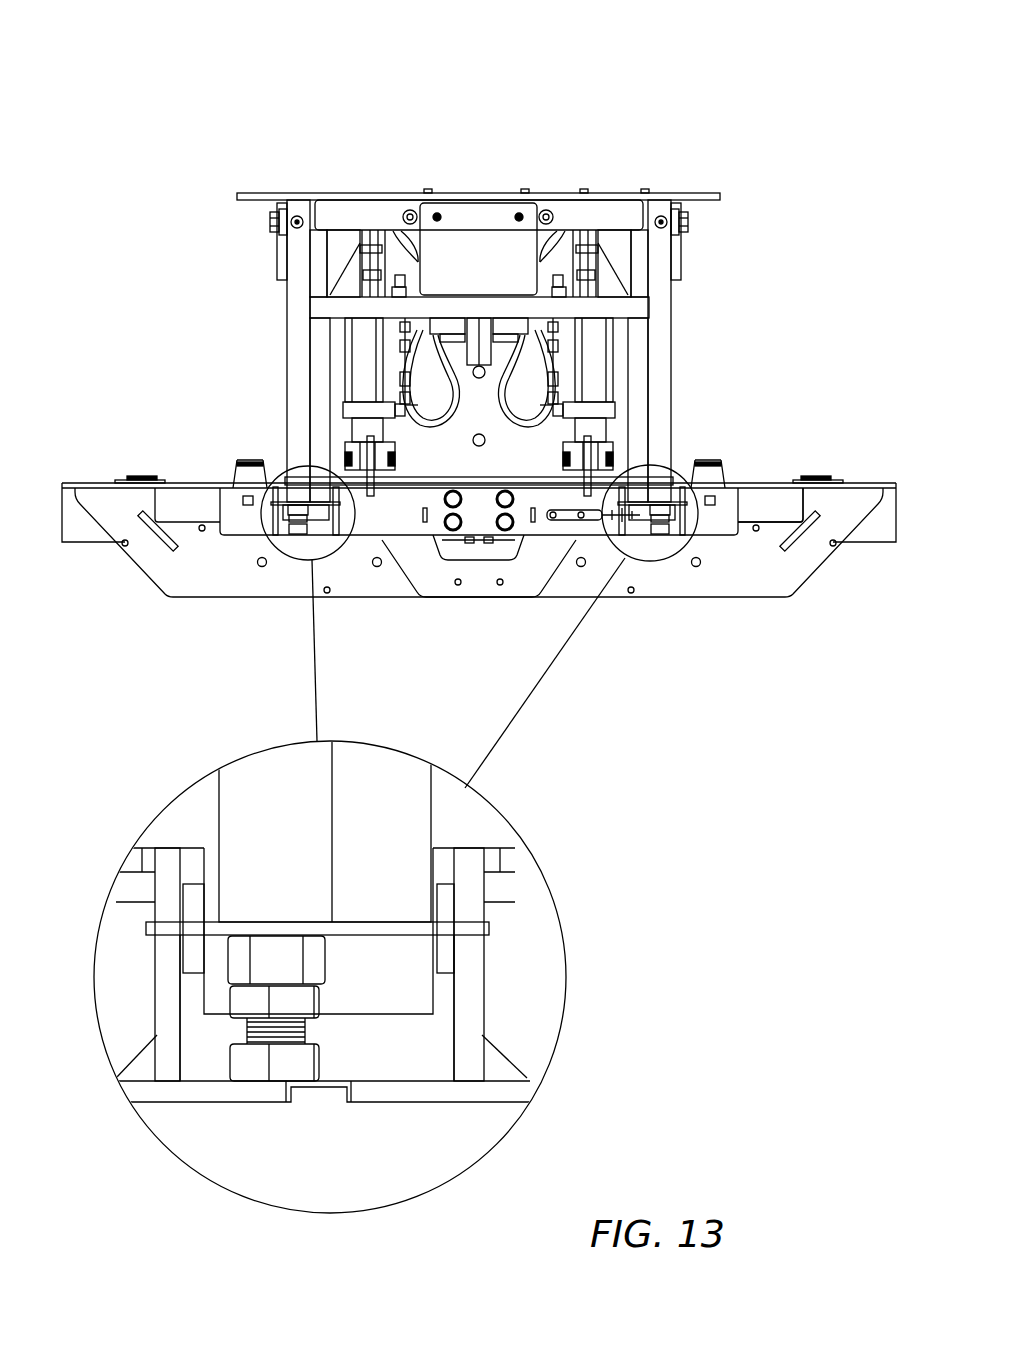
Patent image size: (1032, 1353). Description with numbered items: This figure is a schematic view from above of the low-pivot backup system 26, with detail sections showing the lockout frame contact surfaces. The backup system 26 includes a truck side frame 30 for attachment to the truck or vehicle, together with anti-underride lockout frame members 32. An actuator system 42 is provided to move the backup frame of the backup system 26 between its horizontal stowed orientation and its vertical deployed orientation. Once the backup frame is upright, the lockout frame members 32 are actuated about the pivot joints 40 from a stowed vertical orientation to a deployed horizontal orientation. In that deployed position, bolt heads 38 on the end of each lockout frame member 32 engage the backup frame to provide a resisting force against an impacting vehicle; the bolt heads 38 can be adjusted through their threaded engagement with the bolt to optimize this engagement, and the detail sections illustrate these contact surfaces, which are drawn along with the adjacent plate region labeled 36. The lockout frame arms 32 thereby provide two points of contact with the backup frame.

The low-pivot backup system 26 is at (796, 560).
The truck side frame 30 is at (680, 195).
The anti-underride lockout frame member 32 is at (287, 298).
The base plate 36 is at (410, 1080).
The bolt head 38 is at (320, 1048).
The pivot joint 40 is at (297, 222).
The actuator system 42 is at (360, 370).